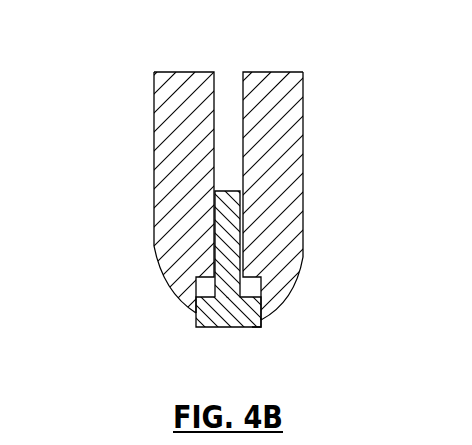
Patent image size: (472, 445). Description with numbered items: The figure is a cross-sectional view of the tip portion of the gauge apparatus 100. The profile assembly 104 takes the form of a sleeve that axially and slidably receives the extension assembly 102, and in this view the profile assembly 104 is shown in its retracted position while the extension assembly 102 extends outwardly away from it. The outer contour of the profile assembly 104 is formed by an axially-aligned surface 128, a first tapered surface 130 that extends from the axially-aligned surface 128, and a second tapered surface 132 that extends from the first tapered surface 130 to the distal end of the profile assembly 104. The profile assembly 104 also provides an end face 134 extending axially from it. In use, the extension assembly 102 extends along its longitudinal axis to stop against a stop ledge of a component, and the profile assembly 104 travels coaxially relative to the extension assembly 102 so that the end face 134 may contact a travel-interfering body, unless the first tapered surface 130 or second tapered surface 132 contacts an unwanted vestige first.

The gauge apparatus 100 is at (126, 106).
The profile assembly 104 is at (180, 192).
The axially-aligned surface 128 is at (154, 223).
The first tapered surface 130 is at (160, 268).
The second tapered surface 132 is at (196, 315).
The extension assembly 102 is at (200, 328).
The end face 134 is at (262, 323).